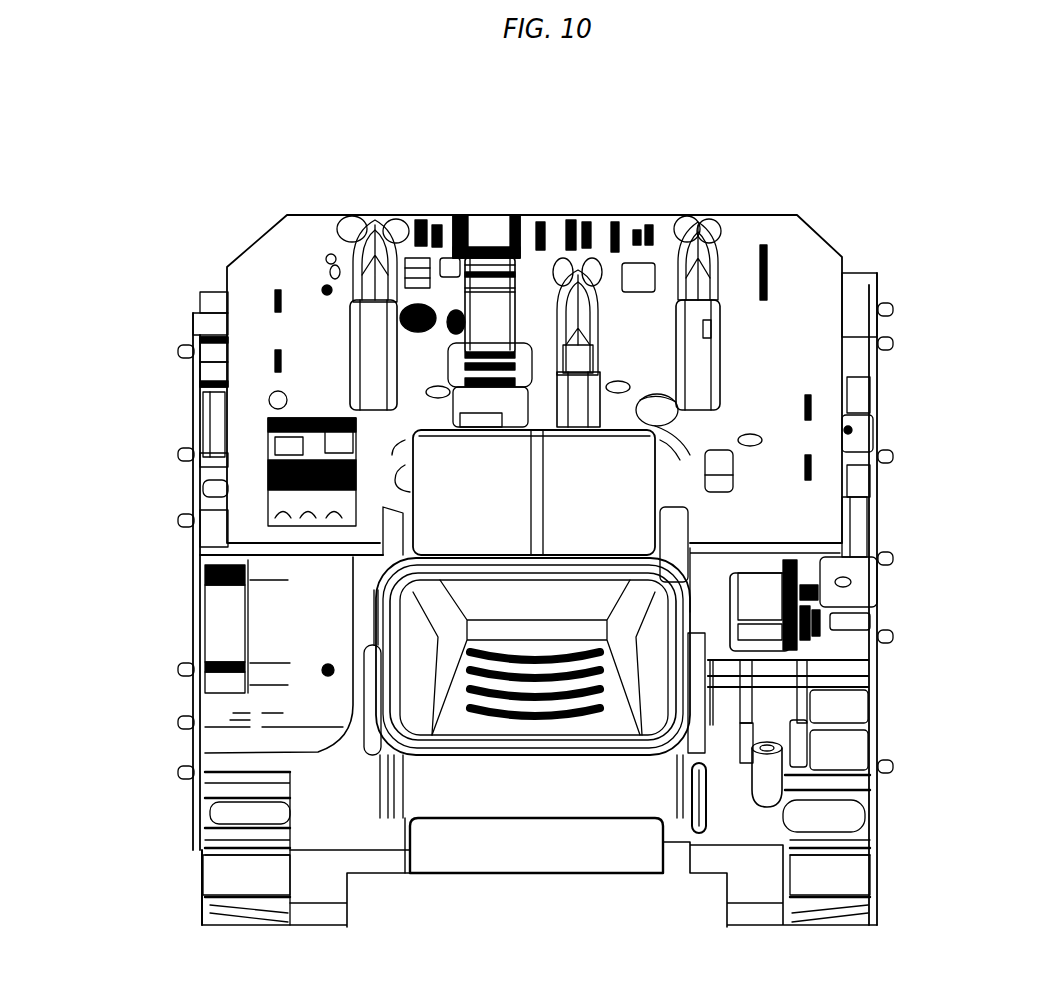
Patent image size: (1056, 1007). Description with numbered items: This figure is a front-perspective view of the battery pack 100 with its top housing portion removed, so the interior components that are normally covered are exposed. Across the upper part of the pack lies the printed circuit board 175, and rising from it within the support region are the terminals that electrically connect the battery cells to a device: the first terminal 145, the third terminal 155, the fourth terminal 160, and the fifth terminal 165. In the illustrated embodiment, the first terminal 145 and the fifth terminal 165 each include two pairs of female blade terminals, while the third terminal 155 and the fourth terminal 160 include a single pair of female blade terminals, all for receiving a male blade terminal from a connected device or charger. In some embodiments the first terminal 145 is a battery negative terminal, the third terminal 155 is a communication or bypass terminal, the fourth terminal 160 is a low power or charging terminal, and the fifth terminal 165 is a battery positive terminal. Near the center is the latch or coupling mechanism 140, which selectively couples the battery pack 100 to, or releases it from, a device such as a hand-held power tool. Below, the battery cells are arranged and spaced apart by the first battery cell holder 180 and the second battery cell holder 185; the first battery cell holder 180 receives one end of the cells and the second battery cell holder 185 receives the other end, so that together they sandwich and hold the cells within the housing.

The battery pack 100 is at (938, 123).
The coupling mechanism 140 is at (643, 480).
The first terminal 145 is at (713, 218).
The third terminal 155 is at (598, 225).
The fourth terminal 160 is at (488, 265).
The fifth terminal 165 is at (352, 210).
The printed circuit board 175 is at (262, 236).
The first battery cell holder 180 is at (875, 868).
The second battery cell holder 185 is at (200, 867).